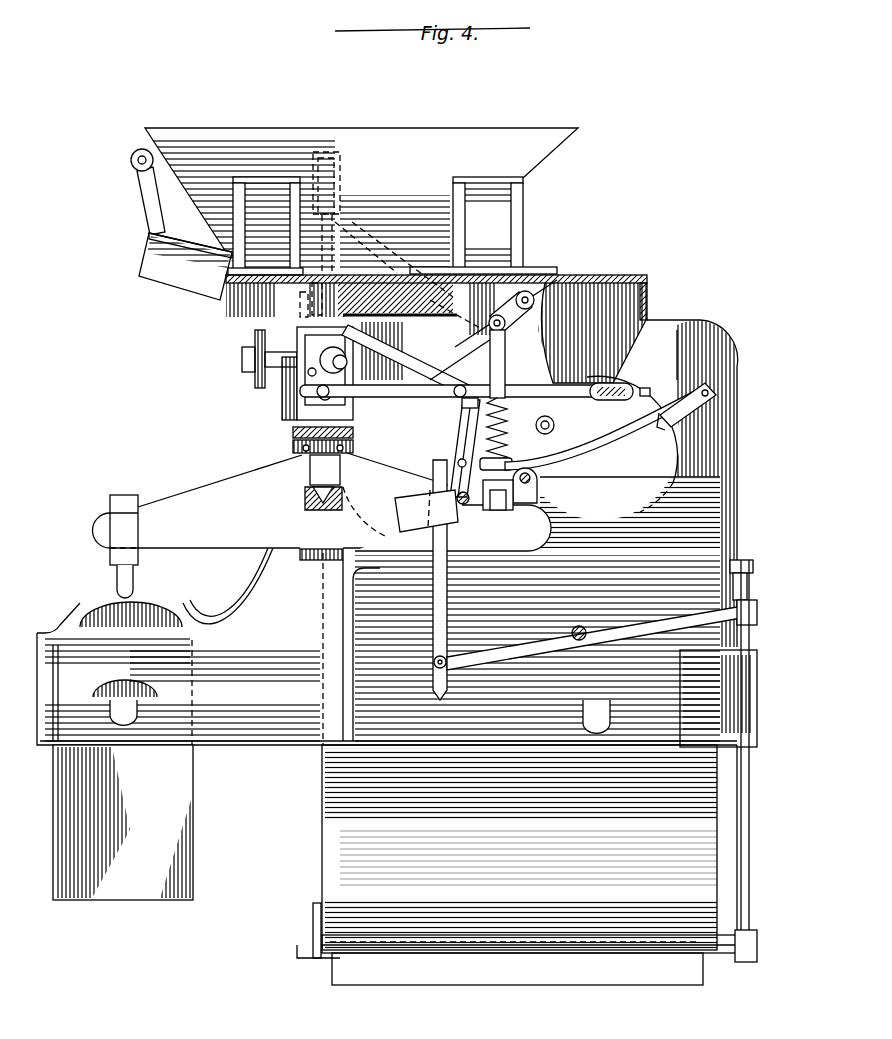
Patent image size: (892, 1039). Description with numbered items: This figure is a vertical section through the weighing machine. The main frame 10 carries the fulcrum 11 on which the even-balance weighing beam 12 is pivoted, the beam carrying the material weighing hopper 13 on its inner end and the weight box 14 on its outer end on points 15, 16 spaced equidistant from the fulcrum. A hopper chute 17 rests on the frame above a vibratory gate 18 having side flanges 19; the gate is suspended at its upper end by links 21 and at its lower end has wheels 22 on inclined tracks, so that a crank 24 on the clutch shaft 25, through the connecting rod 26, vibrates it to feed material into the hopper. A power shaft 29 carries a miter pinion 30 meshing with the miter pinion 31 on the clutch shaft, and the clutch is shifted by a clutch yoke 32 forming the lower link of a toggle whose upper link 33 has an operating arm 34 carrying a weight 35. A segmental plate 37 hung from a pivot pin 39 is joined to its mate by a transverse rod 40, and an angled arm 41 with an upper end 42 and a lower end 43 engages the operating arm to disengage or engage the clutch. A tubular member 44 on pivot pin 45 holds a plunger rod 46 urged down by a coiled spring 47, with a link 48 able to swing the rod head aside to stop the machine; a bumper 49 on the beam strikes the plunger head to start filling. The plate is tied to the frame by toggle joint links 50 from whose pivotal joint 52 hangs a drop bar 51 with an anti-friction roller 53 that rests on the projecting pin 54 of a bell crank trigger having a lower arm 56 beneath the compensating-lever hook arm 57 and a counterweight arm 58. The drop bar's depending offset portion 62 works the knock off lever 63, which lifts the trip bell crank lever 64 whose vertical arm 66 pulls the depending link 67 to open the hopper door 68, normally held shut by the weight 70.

The main frame 10 is at (232, 742).
The fulcrum 11 is at (320, 500).
The weighing beam 12 is at (196, 500).
The material weighing hopper 13 is at (340, 820).
The weight box 14 is at (132, 808).
The point 15 is at (529, 513).
The point 16 is at (128, 495).
The hopper chute 17 is at (222, 143).
The vibratory gate 18 is at (190, 288).
The side flanges 19 is at (175, 240).
The links 21 is at (146, 200).
The wheels 22 is at (520, 273).
The crank 24 is at (297, 402).
The clutch shaft 25 is at (308, 376).
The connecting rod 26 is at (358, 360).
The power shaft 29 is at (242, 354).
The miter pinion 30 is at (318, 332).
The miter pinion 31 is at (255, 376).
The clutch yoke 32 is at (312, 314).
The upper link 33 is at (310, 288).
The operating arm 34 is at (290, 244).
The weight 35 is at (342, 180).
The segmental plate 37 is at (563, 452).
The pivot pins 39 is at (540, 277).
The transverse rod 40 is at (546, 434).
The angled arm 41 is at (360, 445).
The upper end 42 is at (366, 245).
The lower end 43 is at (353, 432).
The tubular member 44 is at (487, 352).
The pivot pin 45 is at (489, 316).
The plunger rod 46 is at (508, 440).
The coiled spring 47 is at (457, 460).
The link 48 is at (630, 428).
The bumper 49 is at (497, 512).
The toggle joint links 50 is at (395, 391).
The drop bar 51 is at (460, 445).
The pivotal joint 52 is at (426, 392).
The anti-friction roller 53 is at (440, 459).
The projecting pin 54 is at (462, 420).
The lower arm 56 is at (463, 506).
The compensating-lever hook arm 57 is at (540, 483).
The counterweight arm 58 is at (426, 506).
The depending offset portion 62 is at (432, 651).
The knock off lever 63 is at (592, 640).
The trip bell crank lever 64 is at (748, 596).
The vertical arm 66 is at (753, 568).
The depending link 67 is at (746, 842).
The hopper door 68 is at (598, 952).
The weight 70 is at (458, 970).